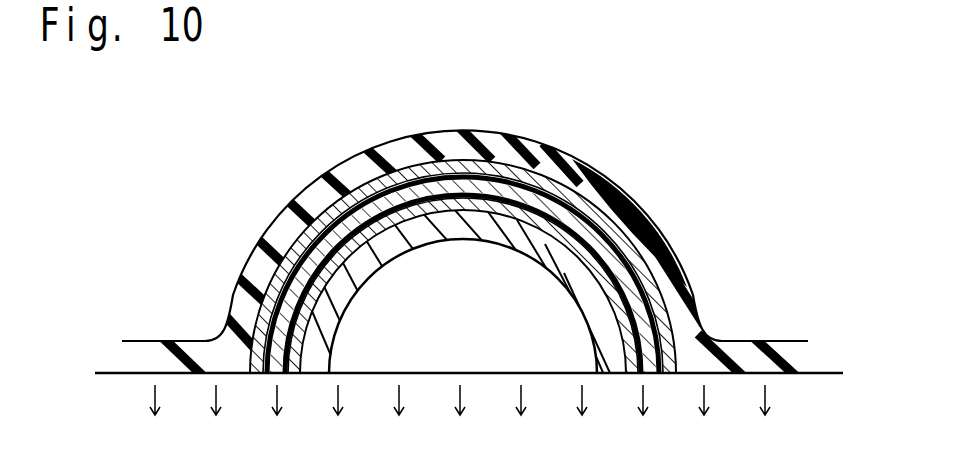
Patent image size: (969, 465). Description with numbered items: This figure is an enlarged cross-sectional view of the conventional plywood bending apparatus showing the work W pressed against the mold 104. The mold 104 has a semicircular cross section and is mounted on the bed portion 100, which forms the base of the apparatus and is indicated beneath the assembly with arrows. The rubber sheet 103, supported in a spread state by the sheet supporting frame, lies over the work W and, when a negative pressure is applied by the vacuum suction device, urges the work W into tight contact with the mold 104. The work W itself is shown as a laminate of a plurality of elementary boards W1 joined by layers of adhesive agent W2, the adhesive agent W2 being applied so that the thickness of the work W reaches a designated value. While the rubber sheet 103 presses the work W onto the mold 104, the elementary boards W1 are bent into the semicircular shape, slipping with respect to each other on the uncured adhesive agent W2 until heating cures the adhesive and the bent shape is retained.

The rubber sheet 103 is at (613, 210).
The mold 104 is at (493, 210).
The work W is at (569, 186).
The elementary boards W1 is at (360, 240).
The adhesive agent W2 is at (410, 197).
The bed portion 100 is at (858, 444).